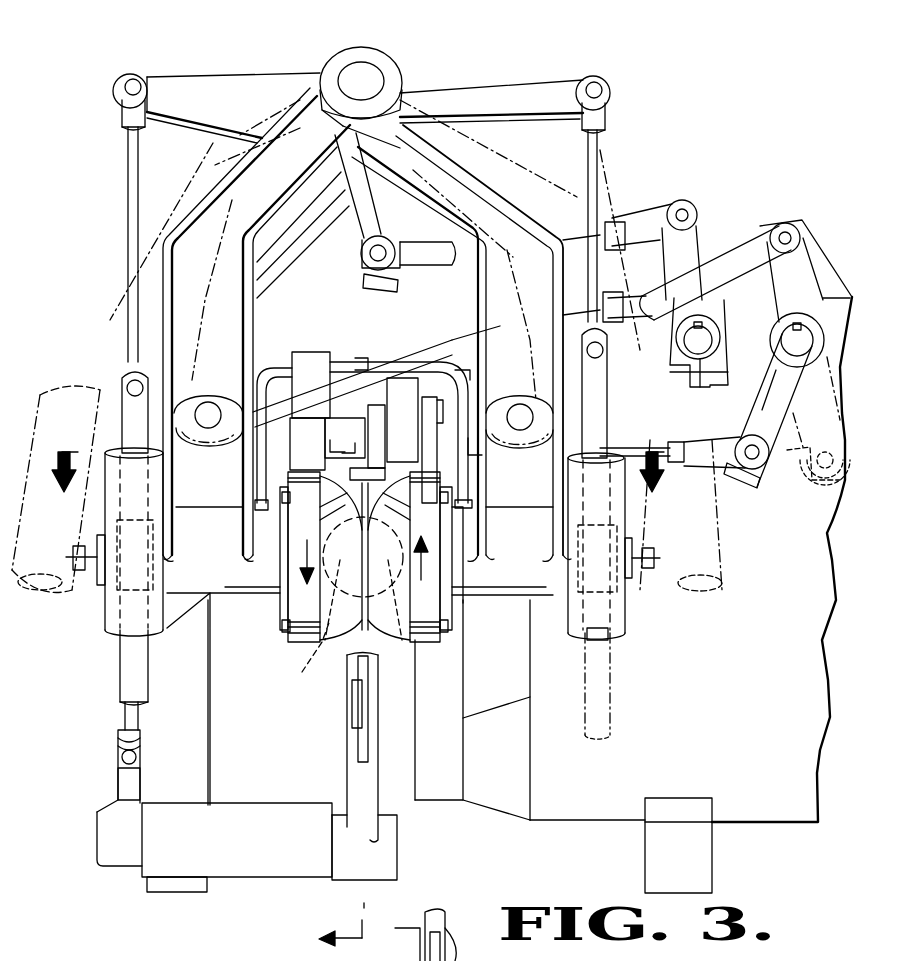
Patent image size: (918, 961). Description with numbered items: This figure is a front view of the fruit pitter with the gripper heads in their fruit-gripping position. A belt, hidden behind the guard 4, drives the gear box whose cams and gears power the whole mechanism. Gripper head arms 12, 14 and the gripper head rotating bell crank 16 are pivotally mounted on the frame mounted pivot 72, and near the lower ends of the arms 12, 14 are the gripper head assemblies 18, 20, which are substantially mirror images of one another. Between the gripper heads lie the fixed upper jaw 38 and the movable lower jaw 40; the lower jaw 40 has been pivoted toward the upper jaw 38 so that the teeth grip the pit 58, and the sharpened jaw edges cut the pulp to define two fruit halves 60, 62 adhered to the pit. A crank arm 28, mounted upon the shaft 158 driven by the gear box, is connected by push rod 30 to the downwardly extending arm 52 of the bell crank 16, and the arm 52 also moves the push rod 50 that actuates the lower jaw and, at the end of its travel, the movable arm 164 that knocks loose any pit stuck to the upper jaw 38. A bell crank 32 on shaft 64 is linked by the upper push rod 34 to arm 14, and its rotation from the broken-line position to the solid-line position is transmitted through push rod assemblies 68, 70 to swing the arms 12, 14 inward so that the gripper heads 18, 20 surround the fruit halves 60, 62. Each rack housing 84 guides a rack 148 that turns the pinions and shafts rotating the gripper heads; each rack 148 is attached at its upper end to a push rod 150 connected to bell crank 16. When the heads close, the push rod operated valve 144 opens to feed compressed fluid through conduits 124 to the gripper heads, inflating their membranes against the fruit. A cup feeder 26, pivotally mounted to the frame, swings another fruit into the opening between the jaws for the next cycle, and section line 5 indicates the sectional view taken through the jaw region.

The gripper head arm 12 is at (540, 280).
The gripper head arm 14 is at (184, 278).
The gripper head rotating belt crank 16 is at (492, 96).
The gripper head assembly 18 is at (441, 649).
The gripper head assembly 20 is at (283, 647).
The cup feeder 26 is at (350, 772).
The crank arm 28 is at (692, 235).
The push rod 30 is at (572, 237).
The bell crank 32 is at (806, 267).
The upper push rod 34 is at (464, 350).
The upper jaw 38 is at (353, 497).
The lower jaw 40 is at (372, 652).
The push rod 50 is at (443, 935).
The arm 52 is at (356, 240).
The pit 58 is at (280, 626).
The fruit half 60 is at (416, 650).
The fruit half 62 is at (306, 658).
The shaft 64 is at (802, 336).
The push rod assembly 68 is at (712, 470).
The push rod assembly 70 is at (732, 248).
The pivot 72 is at (372, 76).
The rack housing 84 is at (106, 618).
The conduit 124 is at (268, 377).
The push rod operated valve 144 is at (316, 352).
The rack 148 is at (128, 420).
The push rod 150 is at (128, 176).
The shaft 158 is at (702, 338).
The movable arm 164 is at (380, 470).
The guard 4 is at (355, 482).
The section line 5 is at (328, 931).